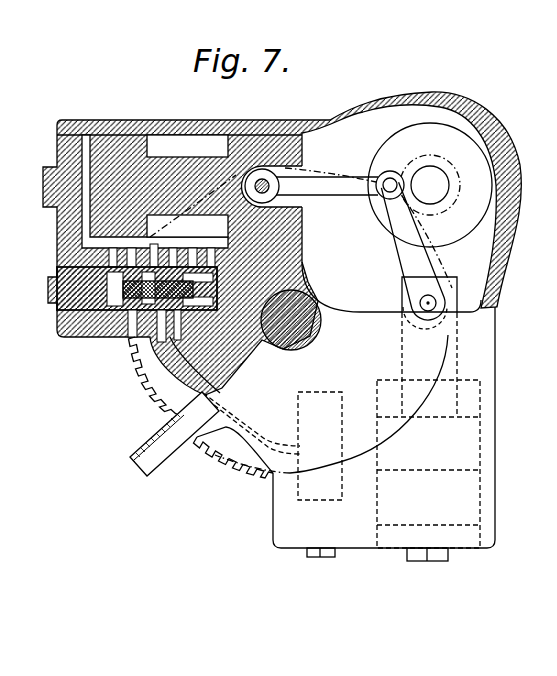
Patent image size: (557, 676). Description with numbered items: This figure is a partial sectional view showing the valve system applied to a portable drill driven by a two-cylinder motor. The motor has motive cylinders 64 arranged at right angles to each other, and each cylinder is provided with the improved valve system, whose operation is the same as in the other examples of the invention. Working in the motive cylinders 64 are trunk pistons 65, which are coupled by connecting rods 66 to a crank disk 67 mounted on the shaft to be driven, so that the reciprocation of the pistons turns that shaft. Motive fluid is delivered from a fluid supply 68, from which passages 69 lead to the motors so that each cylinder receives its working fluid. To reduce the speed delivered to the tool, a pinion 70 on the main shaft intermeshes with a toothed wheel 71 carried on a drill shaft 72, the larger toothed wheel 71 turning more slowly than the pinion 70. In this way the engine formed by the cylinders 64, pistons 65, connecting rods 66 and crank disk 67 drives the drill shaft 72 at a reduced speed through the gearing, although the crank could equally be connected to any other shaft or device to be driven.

The motive cylinders 64 is at (158, 123).
The trunk pistons 65 is at (223, 203).
The connecting rods 66 is at (403, 220).
The crank disk 67 is at (376, 160).
The fluid supply 68 is at (152, 443).
The passages 69 is at (176, 378).
The pinion 70 is at (447, 140).
The toothed wheel 71 is at (237, 462).
The drill shaft 72 is at (315, 340).